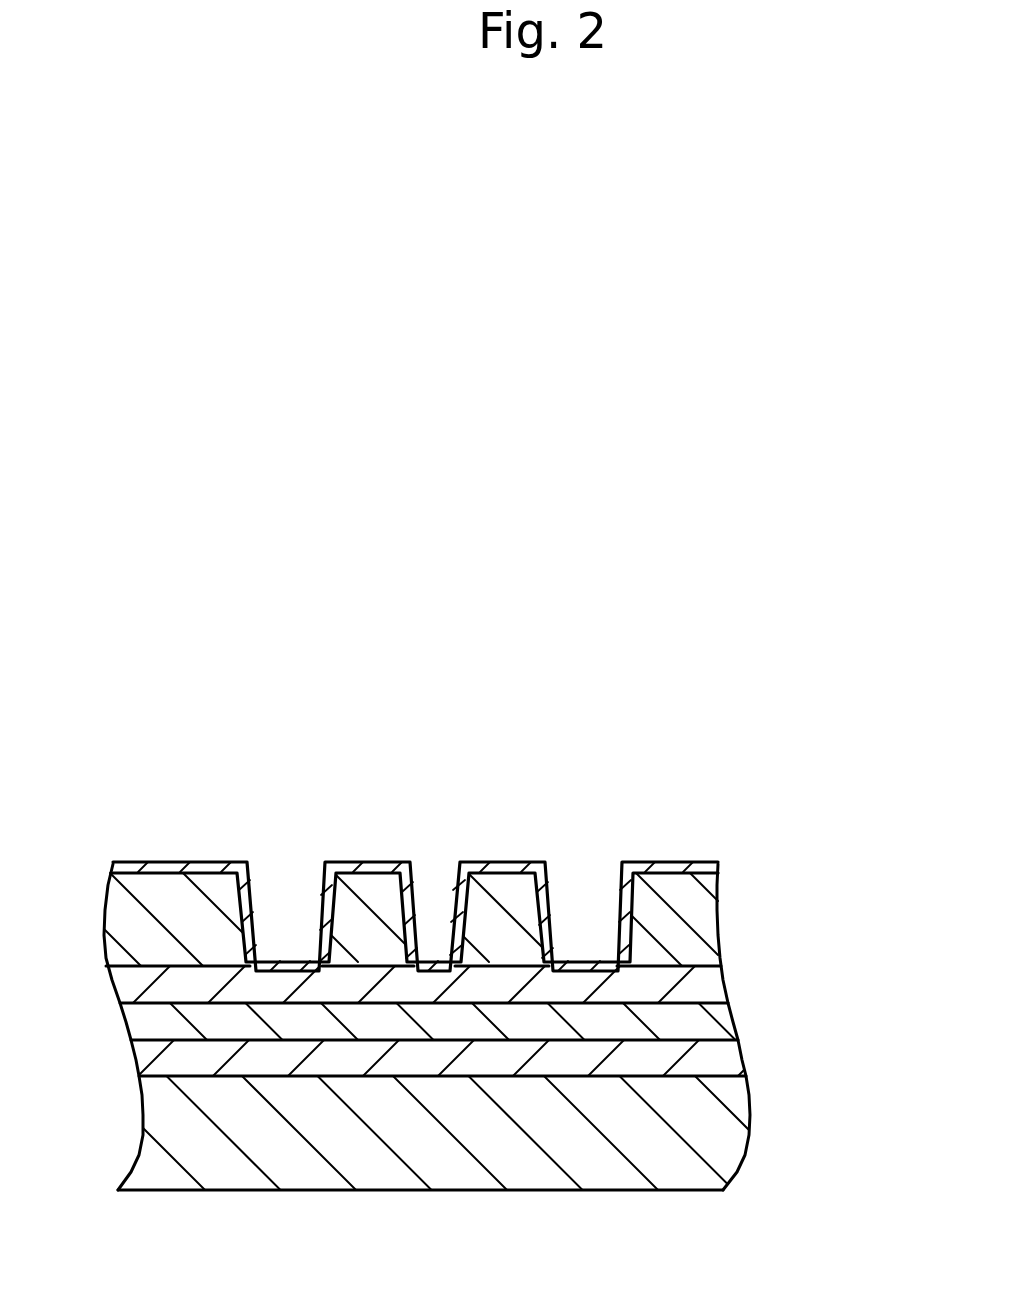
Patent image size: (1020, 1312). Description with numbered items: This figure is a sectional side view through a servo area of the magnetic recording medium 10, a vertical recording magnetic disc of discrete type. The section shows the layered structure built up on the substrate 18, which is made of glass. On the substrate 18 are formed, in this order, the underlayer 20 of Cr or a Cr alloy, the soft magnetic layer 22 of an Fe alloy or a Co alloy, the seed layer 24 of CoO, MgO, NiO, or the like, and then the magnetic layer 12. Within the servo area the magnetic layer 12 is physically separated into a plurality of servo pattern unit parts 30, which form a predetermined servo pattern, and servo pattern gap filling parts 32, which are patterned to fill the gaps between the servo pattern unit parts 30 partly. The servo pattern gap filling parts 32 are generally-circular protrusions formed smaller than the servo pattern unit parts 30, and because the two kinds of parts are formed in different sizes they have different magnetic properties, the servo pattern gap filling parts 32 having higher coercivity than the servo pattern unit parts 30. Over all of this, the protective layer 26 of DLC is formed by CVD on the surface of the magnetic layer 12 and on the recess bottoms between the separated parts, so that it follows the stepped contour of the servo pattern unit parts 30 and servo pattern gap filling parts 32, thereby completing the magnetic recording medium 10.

The magnetic recording medium 10 is at (448, 607).
The magnetic layer 12 is at (742, 918).
The substrate 18 is at (750, 1127).
The underlayer 20 is at (745, 1063).
The soft magnetic layer 22 is at (738, 1023).
The seed layer 24 is at (722, 980).
The protective layer 26 is at (222, 862).
The servo pattern unit parts 30 is at (122, 898).
The servo pattern gap filling parts 32 is at (370, 890).